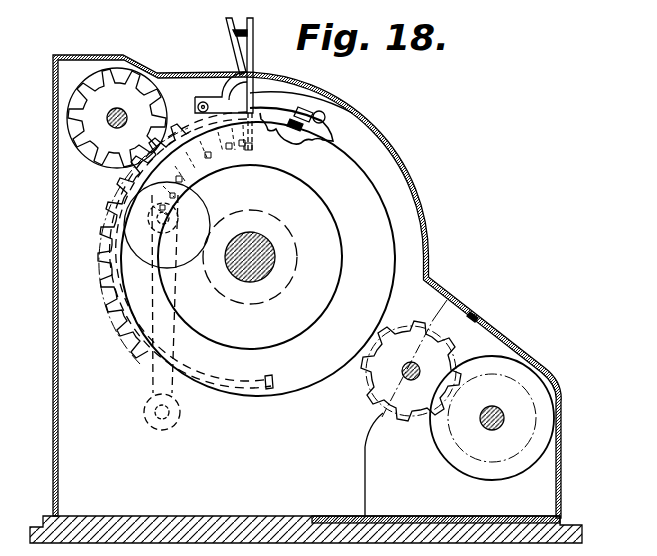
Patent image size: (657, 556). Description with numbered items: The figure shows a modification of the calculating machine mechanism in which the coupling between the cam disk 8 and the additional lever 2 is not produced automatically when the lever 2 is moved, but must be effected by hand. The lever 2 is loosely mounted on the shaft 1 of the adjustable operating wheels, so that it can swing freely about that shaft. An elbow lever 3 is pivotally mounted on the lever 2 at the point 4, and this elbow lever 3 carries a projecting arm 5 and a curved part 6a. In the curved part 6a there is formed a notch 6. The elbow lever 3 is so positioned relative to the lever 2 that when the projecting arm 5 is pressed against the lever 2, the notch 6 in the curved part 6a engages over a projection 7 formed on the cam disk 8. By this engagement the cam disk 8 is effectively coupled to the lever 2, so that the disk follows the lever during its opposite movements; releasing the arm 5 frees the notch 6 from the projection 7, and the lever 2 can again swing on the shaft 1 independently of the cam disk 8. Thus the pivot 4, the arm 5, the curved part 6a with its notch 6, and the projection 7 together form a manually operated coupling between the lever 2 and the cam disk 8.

The shaft of the adjustable operating wheels 1 is at (262, 259).
The lever 2 is at (253, 40).
The elbow lever 3 is at (243, 75).
The pivot point 4 is at (201, 104).
The projecting arm 5 is at (227, 27).
The notch 6 is at (302, 118).
The curved part 6a is at (265, 100).
The projection 7 is at (305, 126).
The cam disk 8 is at (313, 137).